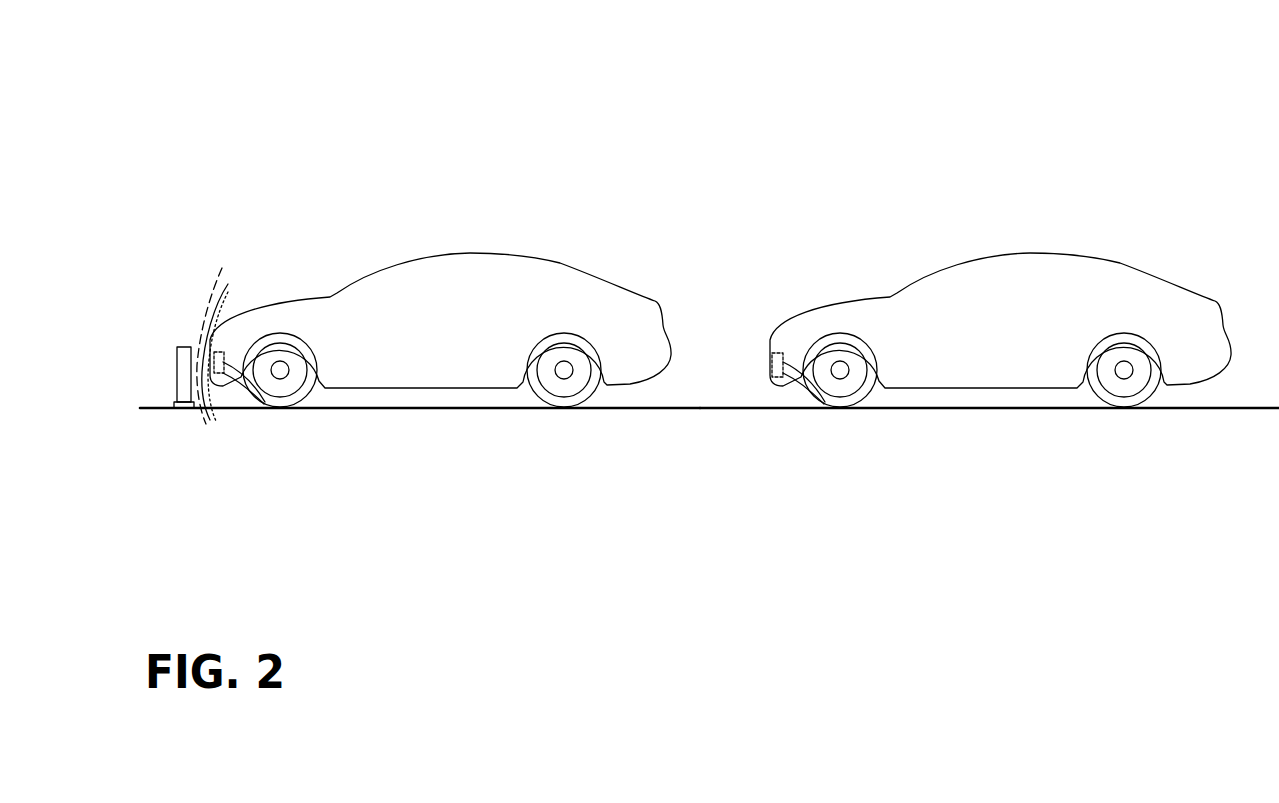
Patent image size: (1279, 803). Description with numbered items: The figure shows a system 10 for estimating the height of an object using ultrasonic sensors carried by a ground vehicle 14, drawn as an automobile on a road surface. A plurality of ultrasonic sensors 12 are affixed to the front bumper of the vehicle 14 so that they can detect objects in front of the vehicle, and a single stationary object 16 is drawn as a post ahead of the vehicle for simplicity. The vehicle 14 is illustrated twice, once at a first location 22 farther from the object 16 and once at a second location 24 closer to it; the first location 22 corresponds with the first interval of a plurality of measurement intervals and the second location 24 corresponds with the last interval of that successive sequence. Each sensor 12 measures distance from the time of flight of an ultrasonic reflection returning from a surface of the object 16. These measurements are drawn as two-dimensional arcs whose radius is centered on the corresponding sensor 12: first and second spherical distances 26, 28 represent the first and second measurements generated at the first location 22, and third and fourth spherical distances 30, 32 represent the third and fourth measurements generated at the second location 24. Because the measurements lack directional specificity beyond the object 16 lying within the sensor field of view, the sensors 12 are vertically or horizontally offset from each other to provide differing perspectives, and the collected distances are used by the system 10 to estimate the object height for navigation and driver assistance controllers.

The system 10 is at (961, 106).
The ultrasonic sensors 12 is at (265, 402).
The vehicle 14 is at (720, 305).
The object 16 is at (170, 364).
The first location 22 is at (989, 452).
The second location 24 is at (420, 450).
The first spherical distance 26 is at (228, 284).
The second spherical distance 28 is at (213, 281).
The third spherical distance 30 is at (222, 303).
The fourth spherical distance 32 is at (213, 397).